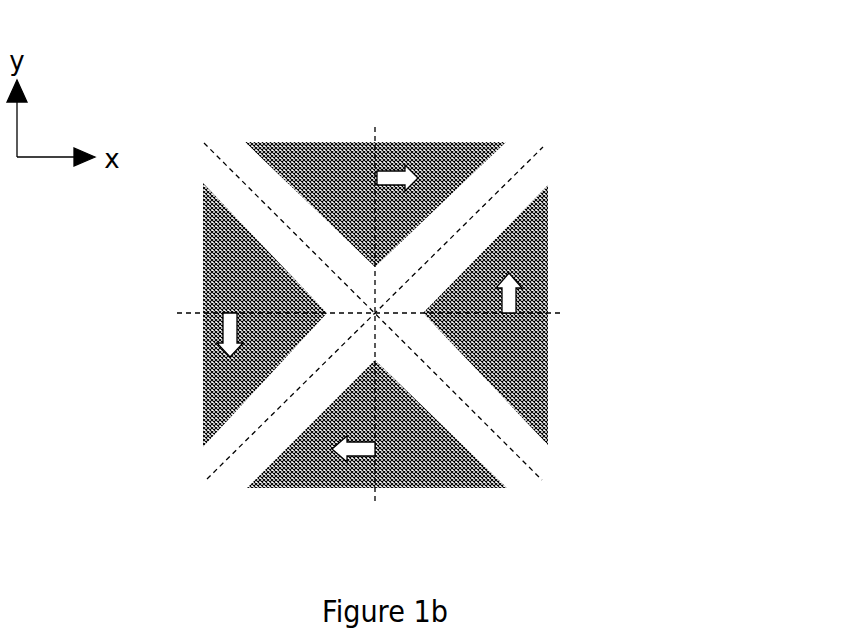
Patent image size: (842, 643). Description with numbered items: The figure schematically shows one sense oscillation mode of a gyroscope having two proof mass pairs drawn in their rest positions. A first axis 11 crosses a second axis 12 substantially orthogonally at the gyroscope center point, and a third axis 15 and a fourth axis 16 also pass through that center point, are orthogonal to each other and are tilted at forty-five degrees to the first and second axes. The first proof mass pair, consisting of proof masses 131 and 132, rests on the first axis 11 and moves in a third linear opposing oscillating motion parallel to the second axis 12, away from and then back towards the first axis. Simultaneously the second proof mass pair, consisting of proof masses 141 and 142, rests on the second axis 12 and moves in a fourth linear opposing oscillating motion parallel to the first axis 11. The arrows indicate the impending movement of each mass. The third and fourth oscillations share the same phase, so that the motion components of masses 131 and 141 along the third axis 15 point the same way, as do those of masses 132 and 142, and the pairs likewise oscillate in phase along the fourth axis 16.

The first axis 11 is at (389, 317).
The second axis 12 is at (385, 294).
The third axis 15 is at (397, 298).
The fourth axis 16 is at (396, 328).
The first proof mass 131 is at (250, 278).
The second proof mass 132 is at (520, 365).
The third proof mass 141 is at (418, 450).
The fourth proof mass 142 is at (338, 185).